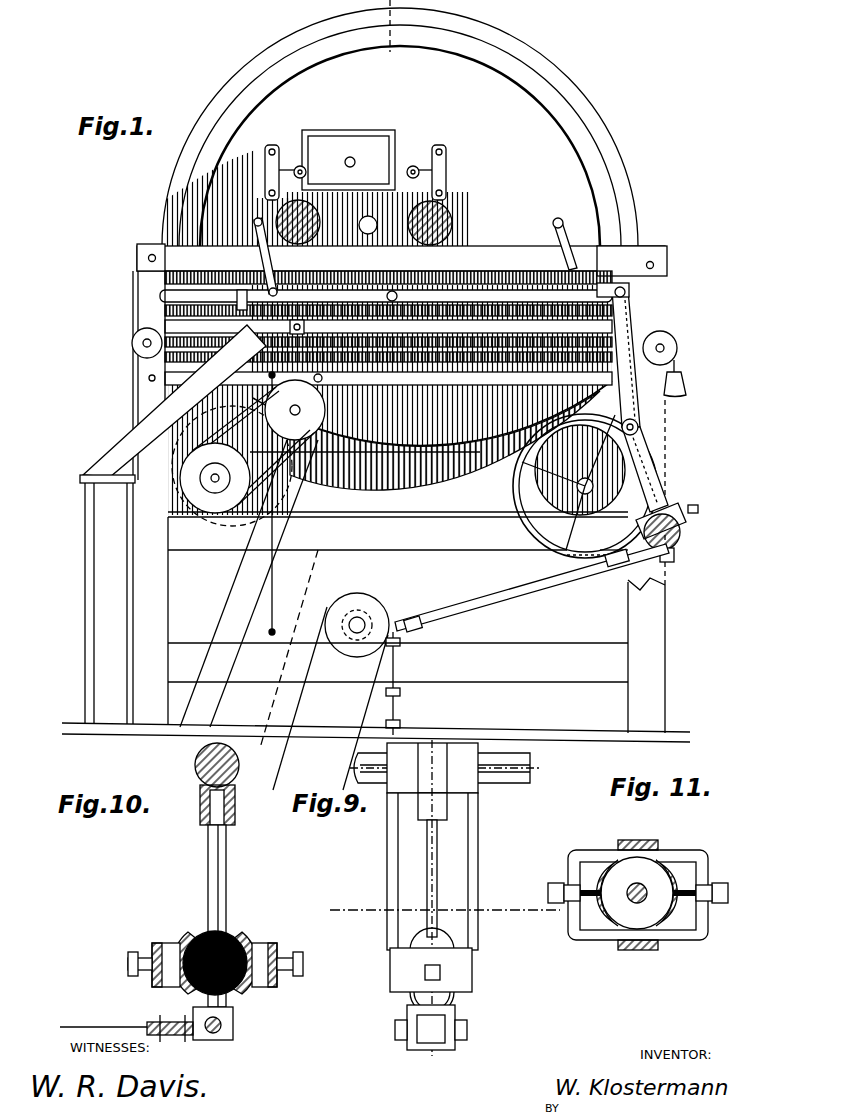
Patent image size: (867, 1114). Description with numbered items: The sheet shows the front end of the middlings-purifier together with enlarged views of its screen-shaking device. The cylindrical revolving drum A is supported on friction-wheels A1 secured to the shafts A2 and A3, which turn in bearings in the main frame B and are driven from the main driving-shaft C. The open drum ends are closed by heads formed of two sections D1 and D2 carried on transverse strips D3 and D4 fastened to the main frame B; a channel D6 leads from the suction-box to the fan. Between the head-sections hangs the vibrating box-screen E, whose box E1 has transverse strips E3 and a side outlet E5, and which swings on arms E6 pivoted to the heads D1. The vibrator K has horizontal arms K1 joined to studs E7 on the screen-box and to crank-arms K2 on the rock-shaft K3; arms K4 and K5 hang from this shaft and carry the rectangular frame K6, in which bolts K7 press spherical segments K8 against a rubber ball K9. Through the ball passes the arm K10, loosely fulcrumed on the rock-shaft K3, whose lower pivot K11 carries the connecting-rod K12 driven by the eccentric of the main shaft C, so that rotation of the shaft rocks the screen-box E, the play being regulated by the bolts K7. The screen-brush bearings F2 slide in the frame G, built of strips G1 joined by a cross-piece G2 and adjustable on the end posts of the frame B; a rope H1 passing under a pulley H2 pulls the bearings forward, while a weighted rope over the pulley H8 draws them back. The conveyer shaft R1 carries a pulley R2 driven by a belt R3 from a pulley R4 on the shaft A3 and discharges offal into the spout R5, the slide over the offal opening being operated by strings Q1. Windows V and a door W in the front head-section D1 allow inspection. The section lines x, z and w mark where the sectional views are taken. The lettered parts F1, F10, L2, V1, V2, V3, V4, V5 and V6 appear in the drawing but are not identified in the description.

In FIG. 1, the revolving drum A is at (409, 123).
In FIG. 1, the friction-wheels A1 is at (228, 450).
In FIG. 1, the shaft A2 is at (540, 485).
In FIG. 1, the shaft A3 is at (232, 475).
In FIG. 1, the main frame B is at (160, 618).
In FIG. 1, the main driving-shaft C is at (362, 612).
In FIG. 1, the head-section D1 is at (567, 162).
In FIG. 1, the head-section D2 is at (431, 370).
In FIG. 1, the transverse strips D3 is at (490, 268).
In FIG. 1, the transverse strips D4 is at (325, 378).
In FIG. 1, the channel D6 is at (505, 345).
In FIG. 1, the vibrating box-screen E is at (455, 290).
In FIG. 1, the box E1 is at (392, 290).
In FIG. 1, the transverse strips E3 is at (244, 297).
In FIG. 1, the outlet E5 is at (567, 244).
In FIG. 1, the arms E6 is at (256, 257).
In FIG. 1, the studs E7 is at (298, 320).
In FIG. 1, the side frame F1 is at (149, 375).
In FIG. 1, the bearings F2 is at (213, 352).
In FIG. 1, the inclined brace F10 is at (173, 524).
In FIG. 1, the frame G is at (135, 334).
In FIG. 1, the strips G1 is at (145, 343).
In FIG. 1, the cross-piece G2 is at (669, 336).
In FIG. 1, the rope H1 is at (135, 410).
In FIG. 1, the pulley H2 is at (150, 360).
In FIG. 1, the pulley H8 is at (665, 348).
In FIG. 1, the vibrator K is at (655, 298).
In FIG. 1, the horizontal arms K1 is at (515, 290).
In FIG. 1, the crank-arms K2 is at (645, 432).
In FIG. 1, the rock-shaft K3 is at (640, 428).
In FIG. 10, the rock-shaft K3 is at (200, 770).
In FIG. 9, the rock-shaft K3 is at (515, 783).
In FIG. 9, the arm K4 is at (470, 878).
In FIG. 11, the arm K4 is at (650, 842).
In FIG. 1, the arm K5 is at (655, 515).
In FIG. 9, the arm K5 is at (387, 866).
In FIG. 11, the arm K5 is at (648, 950).
In FIG. 1, the rectangular frame K6 is at (682, 522).
In FIG. 10, the rectangular frame K6 is at (168, 985).
In FIG. 9, the rectangular frame K6 is at (472, 978).
In FIG. 11, the rectangular frame K6 is at (600, 935).
In FIG. 1, the bolts K7 is at (698, 508).
In FIG. 10, the bolts K7 is at (130, 968).
In FIG. 9, the bolts K7 is at (425, 970).
In FIG. 11, the bolts K7 is at (555, 885).
In FIG. 1, the spherical segments K8 is at (675, 540).
In FIG. 10, the spherical segments K8 is at (192, 942).
In FIG. 9, the spherical segments K8 is at (450, 950).
In FIG. 11, the spherical segments K8 is at (612, 872).
In FIG. 1, the rubber ball K9 is at (683, 388).
In FIG. 10, the rubber ball K9 is at (225, 943).
In FIG. 11, the rubber ball K9 is at (648, 912).
In FIG. 10, the arm K10 is at (208, 872).
In FIG. 9, the arm K10 is at (427, 882).
In FIG. 11, the arm K10 is at (628, 905).
In FIG. 1, the pivot K11 is at (672, 560).
In FIG. 10, the pivot K11 is at (233, 1032).
In FIG. 9, the pivot K11 is at (455, 1022).
In FIG. 1, the connecting-rod K12 is at (532, 590).
In FIG. 10, the connecting-rod K12 is at (108, 1020).
In FIG. 1, the roller shaft L2 is at (368, 216).
In FIG. 1, the strings Q1 is at (278, 532).
In FIG. 1, the conveyer shaft R1 is at (300, 410).
In FIG. 1, the pulley R2 is at (305, 437).
In FIG. 1, the belt R3 is at (249, 583).
In FIG. 1, the pulley R4 is at (200, 490).
In FIG. 1, the spout R5 is at (258, 607).
In FIG. 1, the windows V is at (300, 222).
In FIG. 1, the roller arm V1 is at (413, 152).
In FIG. 1, the arm pivot V2 is at (335, 173).
In FIG. 1, the link V3 is at (446, 176).
In FIG. 1, the bracket V4 is at (265, 170).
In FIG. 1, the bracket screw V5 is at (262, 150).
In FIG. 1, the link pin V6 is at (460, 166).
In FIG. 1, the door W is at (350, 130).
In FIG. 9, the section line w is at (445, 910).
In FIG. 1, the section line x is at (281, 656).
In FIG. 1, the section line z is at (428, 722).
In FIG. 9, the section line z is at (418, 1074).